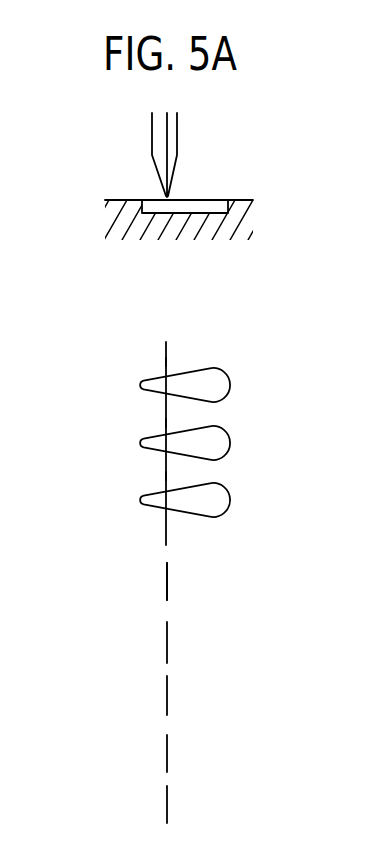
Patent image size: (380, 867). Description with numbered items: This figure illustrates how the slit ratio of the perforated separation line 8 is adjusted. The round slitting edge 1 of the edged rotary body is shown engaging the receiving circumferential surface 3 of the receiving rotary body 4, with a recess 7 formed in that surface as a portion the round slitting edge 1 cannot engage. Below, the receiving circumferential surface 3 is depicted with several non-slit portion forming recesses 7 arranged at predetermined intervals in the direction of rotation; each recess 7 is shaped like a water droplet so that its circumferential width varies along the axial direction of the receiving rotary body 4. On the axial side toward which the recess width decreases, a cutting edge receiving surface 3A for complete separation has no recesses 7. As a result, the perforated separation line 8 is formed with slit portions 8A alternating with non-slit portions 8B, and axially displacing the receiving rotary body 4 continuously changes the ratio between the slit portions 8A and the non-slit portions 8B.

The round slitting edge 1 is at (172, 174).
The receiving rotary body 4 is at (235, 200).
The non-slit portion forming recess 7 is at (195, 213).
The receiving circumferential surface 3 is at (166, 362).
The cutting edge receiving surface for complete separation 3A is at (93, 498).
The perforated separation line 8 is at (183, 653).
The slit portion 8A is at (167, 588).
The non-slit portion 8B is at (163, 553).